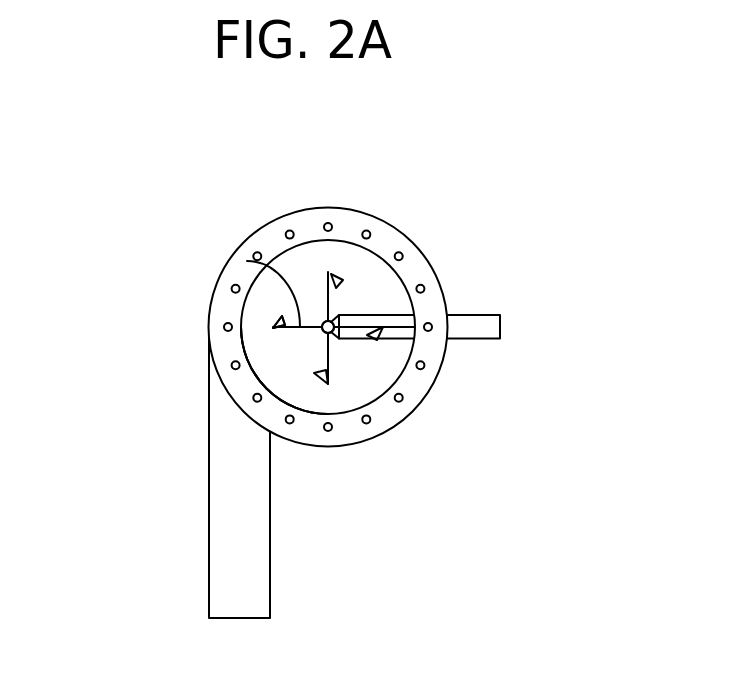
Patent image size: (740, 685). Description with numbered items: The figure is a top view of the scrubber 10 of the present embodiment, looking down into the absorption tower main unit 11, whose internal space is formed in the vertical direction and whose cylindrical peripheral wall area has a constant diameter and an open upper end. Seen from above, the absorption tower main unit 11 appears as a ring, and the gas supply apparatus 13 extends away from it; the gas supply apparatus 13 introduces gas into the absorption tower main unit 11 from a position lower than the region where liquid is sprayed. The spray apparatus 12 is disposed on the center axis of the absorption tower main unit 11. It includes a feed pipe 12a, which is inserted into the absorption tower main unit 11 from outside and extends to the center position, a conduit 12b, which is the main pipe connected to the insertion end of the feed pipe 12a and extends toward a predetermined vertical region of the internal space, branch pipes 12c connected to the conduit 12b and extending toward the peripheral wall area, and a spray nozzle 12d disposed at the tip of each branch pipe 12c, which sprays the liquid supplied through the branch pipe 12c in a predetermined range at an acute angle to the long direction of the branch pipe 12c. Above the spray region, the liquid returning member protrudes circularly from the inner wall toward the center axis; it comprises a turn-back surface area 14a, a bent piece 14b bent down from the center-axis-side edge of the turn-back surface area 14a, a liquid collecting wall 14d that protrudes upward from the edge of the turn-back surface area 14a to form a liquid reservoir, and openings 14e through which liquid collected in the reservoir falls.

The scrubber 10 is at (82, 196).
The absorption tower main unit 11 is at (407, 235).
The spray apparatus 12 is at (345, 307).
The feed pipe 12a is at (478, 325).
The conduit 12b is at (321, 330).
The branch pipe 12c is at (271, 268).
The spray nozzle 12d is at (280, 320).
The gas supply apparatus 13 is at (220, 540).
The turn-back surface area 14a is at (420, 382).
The bent piece 14b is at (356, 407).
The liquid collecting wall 14d is at (357, 465).
The opening 14e is at (399, 401).